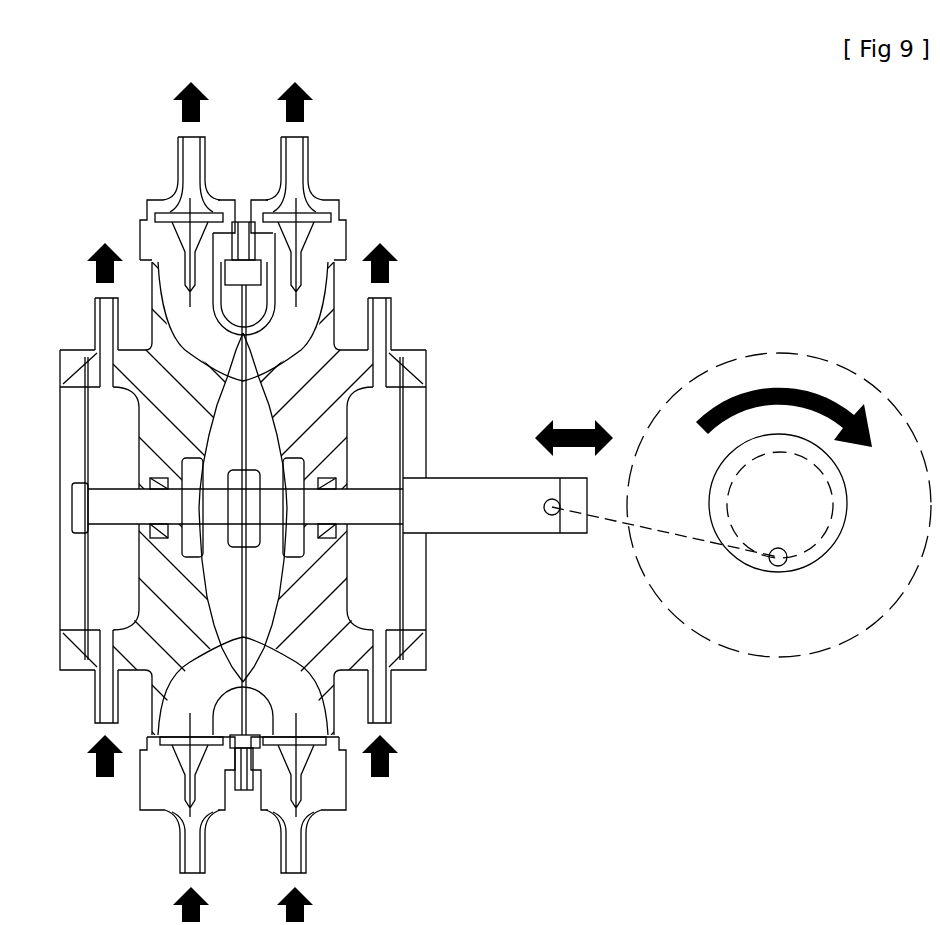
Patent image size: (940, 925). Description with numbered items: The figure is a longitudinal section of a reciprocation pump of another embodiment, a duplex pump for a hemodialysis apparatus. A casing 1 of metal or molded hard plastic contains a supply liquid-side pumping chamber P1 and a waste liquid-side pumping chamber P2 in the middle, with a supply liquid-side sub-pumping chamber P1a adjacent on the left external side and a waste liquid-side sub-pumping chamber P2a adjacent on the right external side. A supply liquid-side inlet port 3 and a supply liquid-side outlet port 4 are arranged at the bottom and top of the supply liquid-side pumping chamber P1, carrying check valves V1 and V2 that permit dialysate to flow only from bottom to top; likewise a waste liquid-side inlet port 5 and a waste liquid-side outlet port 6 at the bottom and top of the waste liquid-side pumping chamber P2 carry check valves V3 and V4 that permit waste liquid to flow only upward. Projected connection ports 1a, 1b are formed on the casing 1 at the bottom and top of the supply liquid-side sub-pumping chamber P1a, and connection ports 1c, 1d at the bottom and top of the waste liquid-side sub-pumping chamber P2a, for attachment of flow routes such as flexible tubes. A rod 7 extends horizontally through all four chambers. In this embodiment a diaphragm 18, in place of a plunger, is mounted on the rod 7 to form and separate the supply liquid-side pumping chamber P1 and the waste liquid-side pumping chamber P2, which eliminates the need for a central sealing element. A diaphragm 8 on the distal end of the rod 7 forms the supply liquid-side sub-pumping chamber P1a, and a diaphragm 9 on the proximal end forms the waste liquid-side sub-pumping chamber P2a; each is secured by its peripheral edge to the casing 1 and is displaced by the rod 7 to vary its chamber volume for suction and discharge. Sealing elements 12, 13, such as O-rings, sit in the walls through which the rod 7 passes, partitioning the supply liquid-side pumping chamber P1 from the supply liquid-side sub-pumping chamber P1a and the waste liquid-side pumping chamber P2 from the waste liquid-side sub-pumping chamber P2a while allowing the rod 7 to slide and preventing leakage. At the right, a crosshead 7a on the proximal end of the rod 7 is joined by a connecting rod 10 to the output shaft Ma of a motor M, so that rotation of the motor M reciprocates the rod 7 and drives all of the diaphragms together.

The casing 1 is at (56, 357).
The connection port 1a is at (93, 700).
The connection port 1b is at (93, 333).
The connection port 1c is at (393, 700).
The connection port 1d is at (393, 329).
The supply liquid-side inlet port 3 is at (178, 848).
The supply liquid-side outlet port 4 is at (181, 158).
The waste liquid-side inlet port 5 is at (312, 851).
The waste liquid-side outlet port 6 is at (312, 152).
The rod 7 is at (95, 504).
The crosshead 7a is at (579, 535).
The diaphragm 8 is at (83, 411).
The diaphragm 9 is at (405, 400).
The connecting rod 10 is at (668, 545).
The sealing element 12 is at (148, 533).
The sealing element 13 is at (337, 532).
The diaphragm 18 is at (240, 580).
The check valve V1 is at (185, 798).
The check valve V2 is at (150, 218).
The check valve V3 is at (328, 812).
The check valve V4 is at (333, 202).
The motor M is at (865, 377).
The output shaft Ma is at (720, 474).
The supply liquid-side pumping chamber P1 is at (205, 463).
The waste liquid-side pumping chamber P2 is at (251, 463).
The supply liquid-side sub-pumping chamber P1a is at (130, 471).
The waste liquid-side sub-pumping chamber P2a is at (405, 471).